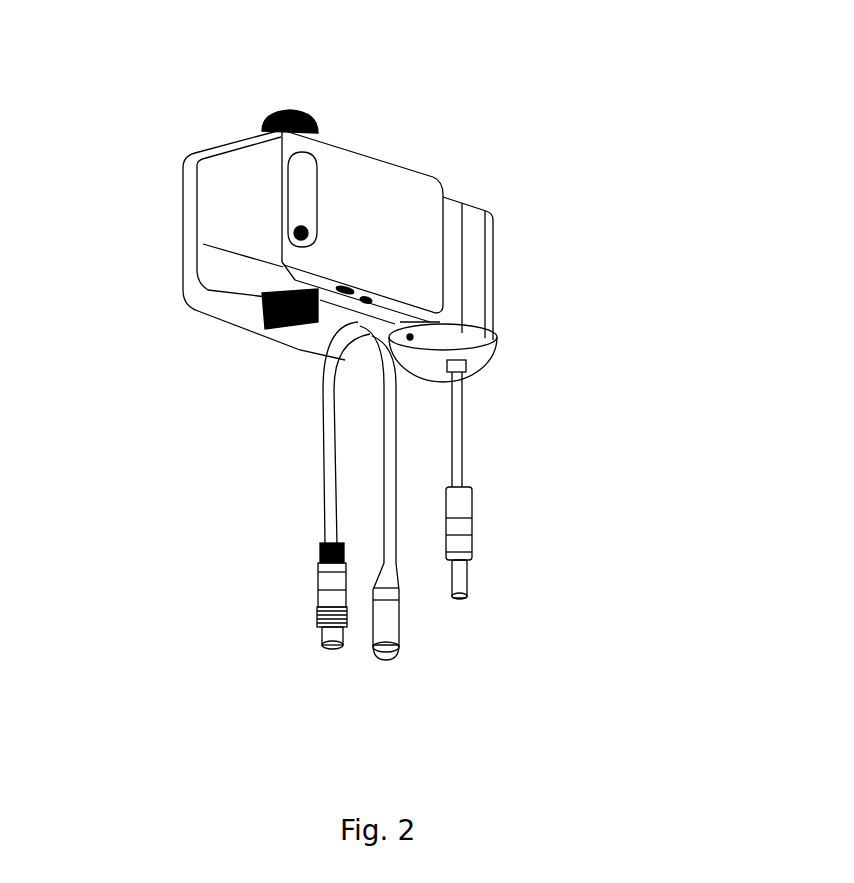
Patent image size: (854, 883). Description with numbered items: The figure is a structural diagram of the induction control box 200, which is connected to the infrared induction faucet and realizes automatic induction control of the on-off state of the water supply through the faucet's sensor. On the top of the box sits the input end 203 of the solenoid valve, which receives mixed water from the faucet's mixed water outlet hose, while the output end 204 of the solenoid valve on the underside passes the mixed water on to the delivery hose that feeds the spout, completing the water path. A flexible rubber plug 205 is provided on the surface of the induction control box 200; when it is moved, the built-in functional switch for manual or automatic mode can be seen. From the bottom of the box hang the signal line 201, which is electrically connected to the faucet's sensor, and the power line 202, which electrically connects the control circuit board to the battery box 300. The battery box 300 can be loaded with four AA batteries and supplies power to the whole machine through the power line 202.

The induction control box 200 is at (237, 227).
The signal line 201 is at (308, 590).
The power line 202 is at (473, 583).
The input end of the solenoid valve 203 is at (297, 110).
The output end of the solenoid valve 204 is at (288, 343).
The flexible rubber plug 205 is at (300, 212).
The battery box 300 is at (506, 313).